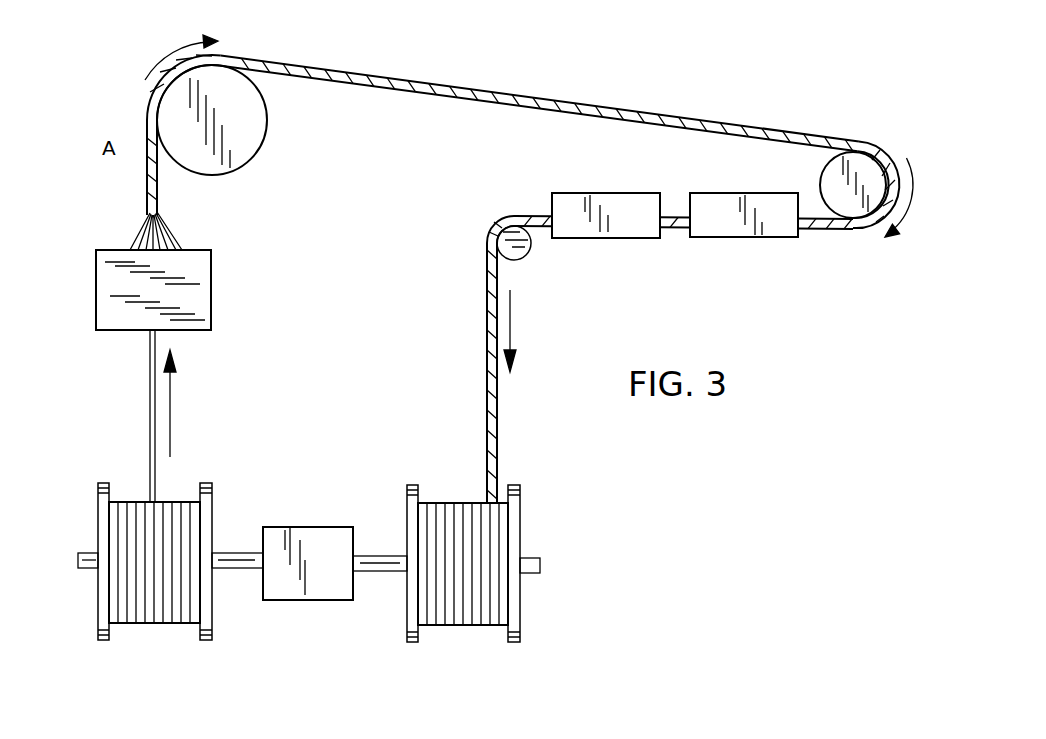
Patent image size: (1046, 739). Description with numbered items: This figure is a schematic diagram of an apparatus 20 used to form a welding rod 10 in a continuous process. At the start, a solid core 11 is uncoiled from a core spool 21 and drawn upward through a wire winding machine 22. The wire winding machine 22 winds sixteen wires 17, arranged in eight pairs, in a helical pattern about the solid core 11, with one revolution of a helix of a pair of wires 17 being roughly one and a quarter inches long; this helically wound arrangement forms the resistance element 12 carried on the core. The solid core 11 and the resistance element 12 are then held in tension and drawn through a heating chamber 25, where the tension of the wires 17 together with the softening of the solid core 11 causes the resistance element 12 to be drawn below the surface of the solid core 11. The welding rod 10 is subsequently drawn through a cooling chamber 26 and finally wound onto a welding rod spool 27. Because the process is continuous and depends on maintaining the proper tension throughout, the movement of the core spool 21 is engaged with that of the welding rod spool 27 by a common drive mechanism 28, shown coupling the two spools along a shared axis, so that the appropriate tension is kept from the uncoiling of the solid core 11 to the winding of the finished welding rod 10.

The welding rod 10 is at (480, 420).
The solid core 11 is at (468, 88).
The resistance element 12 is at (320, 66).
The wires 17 is at (163, 226).
The apparatus 20 is at (610, 97).
The core spool 21 is at (105, 648).
The wire winding machine 22 is at (205, 295).
The heating chamber 25 is at (727, 240).
The cooling chamber 26 is at (595, 250).
The welding rod spool 27 is at (417, 643).
The common drive mechanism 28 is at (318, 605).